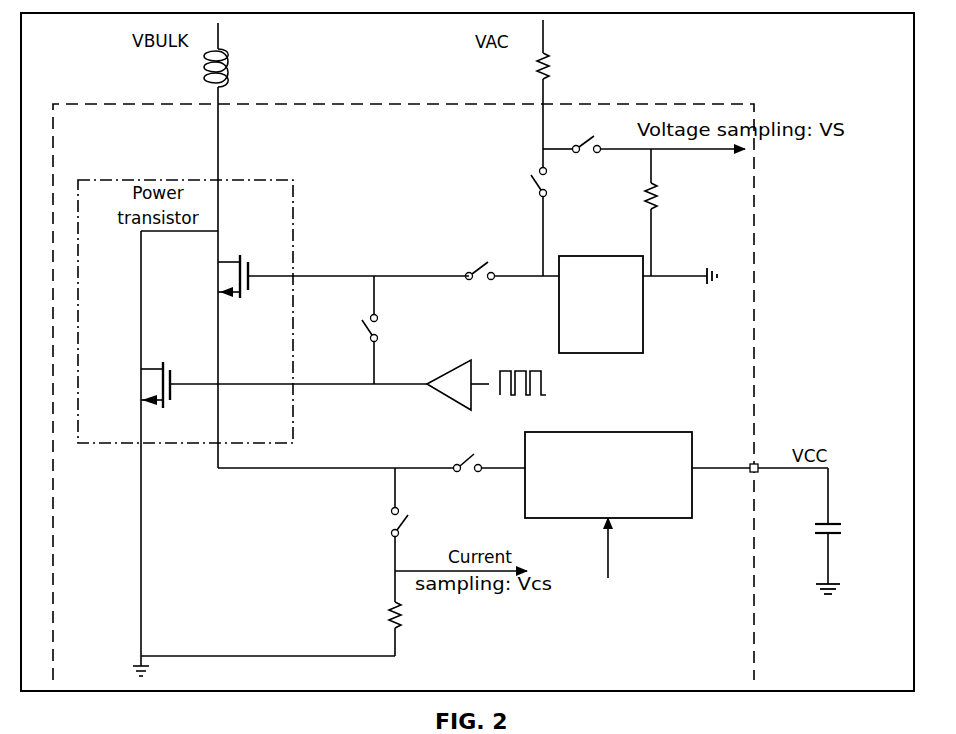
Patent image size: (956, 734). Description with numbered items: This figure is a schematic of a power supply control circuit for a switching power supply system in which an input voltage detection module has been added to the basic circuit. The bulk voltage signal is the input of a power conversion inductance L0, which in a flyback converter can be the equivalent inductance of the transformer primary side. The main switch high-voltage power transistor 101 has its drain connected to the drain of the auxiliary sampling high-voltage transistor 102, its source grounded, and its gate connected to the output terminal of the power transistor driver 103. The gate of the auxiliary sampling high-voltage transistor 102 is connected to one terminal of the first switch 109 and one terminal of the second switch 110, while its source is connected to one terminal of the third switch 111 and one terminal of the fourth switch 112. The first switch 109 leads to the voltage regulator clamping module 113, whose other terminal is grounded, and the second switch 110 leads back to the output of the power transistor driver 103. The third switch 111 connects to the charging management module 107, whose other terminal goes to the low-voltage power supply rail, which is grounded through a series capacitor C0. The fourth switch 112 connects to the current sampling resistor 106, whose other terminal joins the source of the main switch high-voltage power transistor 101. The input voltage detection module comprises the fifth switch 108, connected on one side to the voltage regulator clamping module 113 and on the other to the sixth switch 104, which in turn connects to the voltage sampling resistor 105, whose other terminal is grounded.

The main switch high-voltage power transistor 101 is at (173, 373).
The auxiliary sampling high-voltage transistor 102 is at (233, 248).
The power transistor driver 103 is at (484, 371).
The sixth switch 104 is at (594, 131).
The voltage sampling resistor 105 is at (665, 198).
The current sampling resistor 106 is at (406, 614).
The VCC charging management module 107 is at (620, 433).
The fifth switch 108 is at (555, 187).
The first switch 109 is at (490, 258).
The second switch 110 is at (388, 328).
The third switch 111 is at (472, 448).
The fourth switch 112 is at (410, 512).
The voltage regulator clamping module 113 is at (655, 328).
The power conversion inductance L0 is at (253, 70).
The capacitor C0 is at (839, 517).